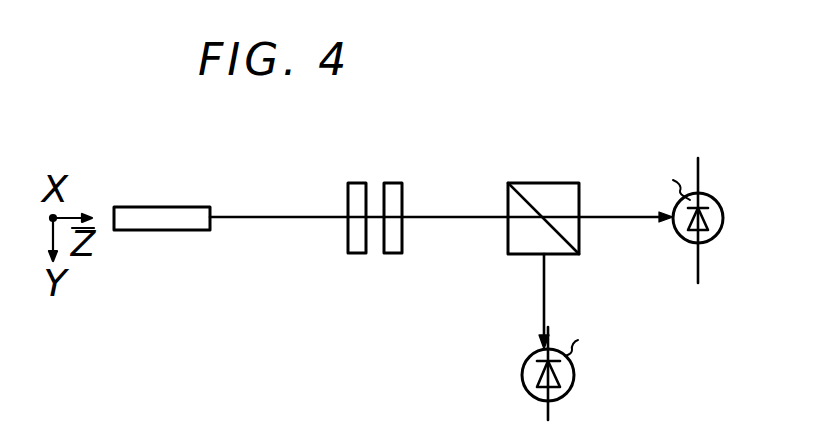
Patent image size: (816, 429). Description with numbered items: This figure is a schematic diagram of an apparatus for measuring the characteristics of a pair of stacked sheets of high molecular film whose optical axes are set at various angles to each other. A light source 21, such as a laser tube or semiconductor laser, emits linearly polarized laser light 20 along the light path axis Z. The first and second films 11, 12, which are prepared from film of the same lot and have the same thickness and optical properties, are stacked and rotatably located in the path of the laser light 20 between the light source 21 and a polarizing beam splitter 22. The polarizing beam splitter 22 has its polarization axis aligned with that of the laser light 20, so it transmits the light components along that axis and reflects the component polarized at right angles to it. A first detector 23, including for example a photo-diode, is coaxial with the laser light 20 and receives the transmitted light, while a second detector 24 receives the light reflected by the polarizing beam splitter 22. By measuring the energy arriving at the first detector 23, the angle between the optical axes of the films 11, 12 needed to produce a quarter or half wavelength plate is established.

The first film 11 is at (357, 183).
The second film 12 is at (397, 183).
The linearly polarized laser light 20 is at (282, 219).
The light source 21 is at (193, 232).
The polarizing beam splitter 22 is at (548, 183).
The first detector 23 is at (675, 236).
The second detector 24 is at (522, 369).